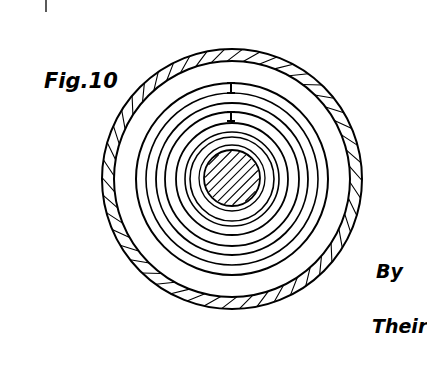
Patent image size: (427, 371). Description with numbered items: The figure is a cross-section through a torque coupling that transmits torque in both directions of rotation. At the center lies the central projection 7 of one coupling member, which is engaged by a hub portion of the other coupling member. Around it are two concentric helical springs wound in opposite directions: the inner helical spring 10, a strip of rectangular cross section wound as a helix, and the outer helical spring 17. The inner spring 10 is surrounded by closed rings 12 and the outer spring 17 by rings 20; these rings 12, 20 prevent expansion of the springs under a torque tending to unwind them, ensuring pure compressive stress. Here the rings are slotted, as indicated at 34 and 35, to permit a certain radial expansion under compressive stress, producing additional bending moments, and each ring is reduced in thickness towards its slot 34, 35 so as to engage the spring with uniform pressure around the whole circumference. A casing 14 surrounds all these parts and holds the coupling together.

The central projection 7 is at (210, 180).
The helical spring 10 is at (290, 203).
The rings 12 is at (293, 168).
The casing 14 is at (300, 73).
The helical spring 17 is at (295, 133).
The rings 20 is at (297, 102).
The slot 34 is at (233, 84).
The slot 35 is at (226, 114).